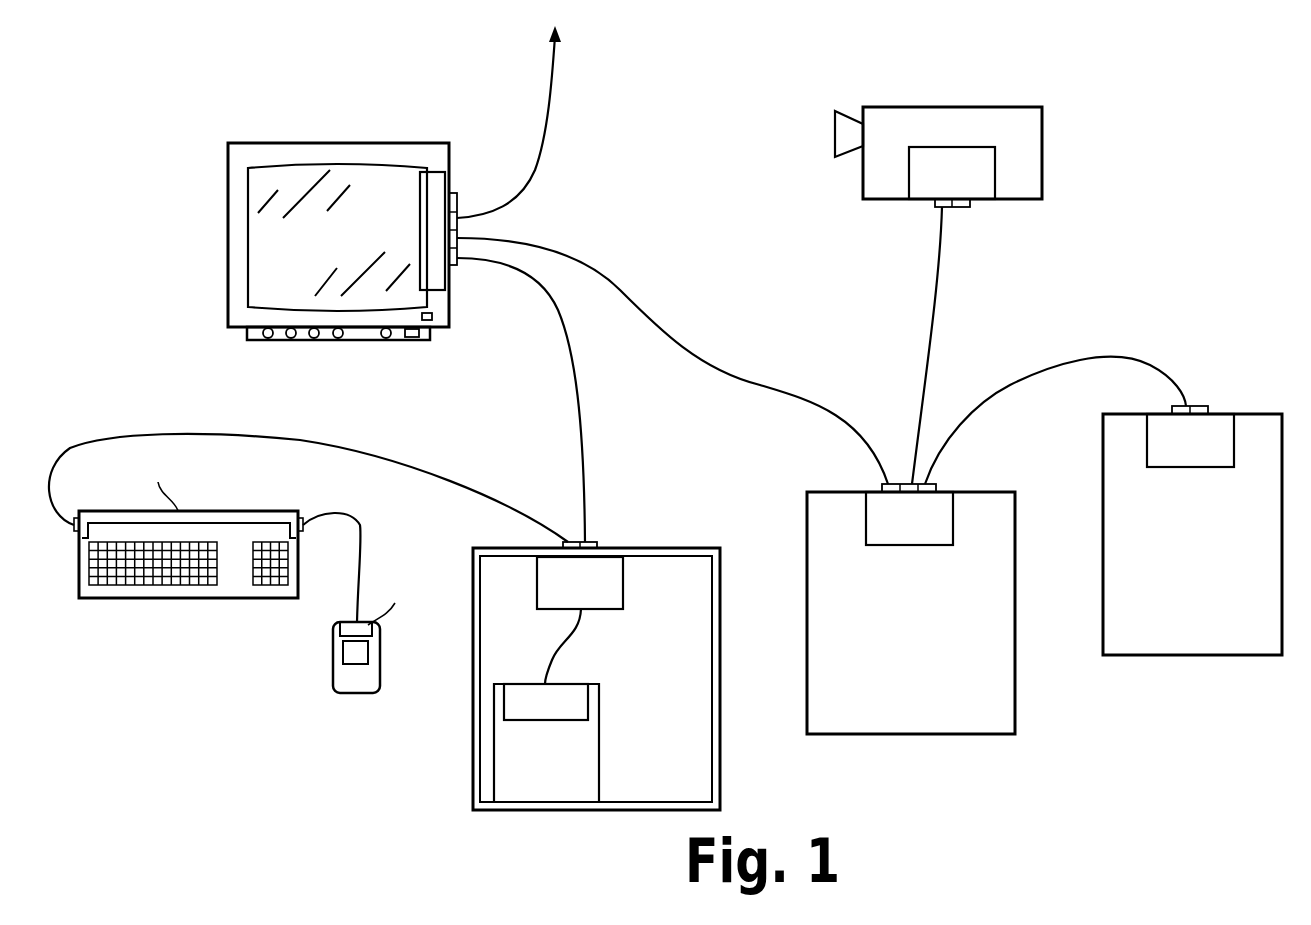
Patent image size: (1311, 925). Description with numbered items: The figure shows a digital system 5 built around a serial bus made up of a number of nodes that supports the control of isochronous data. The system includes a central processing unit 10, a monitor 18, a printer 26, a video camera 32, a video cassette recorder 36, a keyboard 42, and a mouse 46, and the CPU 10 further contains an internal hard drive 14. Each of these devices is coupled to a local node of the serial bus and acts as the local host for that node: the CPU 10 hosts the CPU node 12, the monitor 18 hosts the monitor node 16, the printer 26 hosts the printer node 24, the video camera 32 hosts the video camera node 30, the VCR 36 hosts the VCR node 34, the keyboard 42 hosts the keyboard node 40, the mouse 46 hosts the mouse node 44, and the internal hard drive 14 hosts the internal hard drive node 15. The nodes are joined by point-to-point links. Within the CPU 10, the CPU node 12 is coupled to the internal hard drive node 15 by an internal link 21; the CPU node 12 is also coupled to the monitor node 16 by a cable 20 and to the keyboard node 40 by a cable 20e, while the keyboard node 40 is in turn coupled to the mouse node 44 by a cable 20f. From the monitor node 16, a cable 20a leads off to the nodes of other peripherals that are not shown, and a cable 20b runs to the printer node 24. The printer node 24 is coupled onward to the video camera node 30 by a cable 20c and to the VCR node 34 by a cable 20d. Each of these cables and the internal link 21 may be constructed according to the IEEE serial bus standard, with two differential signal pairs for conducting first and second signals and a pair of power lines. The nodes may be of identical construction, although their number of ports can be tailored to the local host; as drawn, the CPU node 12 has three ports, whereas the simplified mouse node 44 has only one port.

The digital system 5 is at (1108, 808).
The central processing unit (CPU) 10 is at (720, 775).
The CPU node 12 is at (622, 567).
The internal hard drive 14 is at (599, 760).
The internal hard drive node 15 is at (588, 695).
The monitor node 16 is at (440, 177).
The monitor 18 is at (228, 211).
The cable 20 is at (584, 411).
The cable 20a is at (546, 145).
The cable 20b is at (614, 277).
The cable 20c is at (930, 292).
The cable 20d is at (1045, 380).
The cable 20e is at (378, 451).
The cable 20f is at (385, 522).
The internal link 21 is at (573, 650).
The printer node 24 is at (878, 496).
The printer 26 is at (905, 734).
The video camera node 30 is at (985, 196).
The video camera 32 is at (985, 107).
The VCR node 34 is at (1158, 425).
The video cassette recorder (VCR) 36 is at (1183, 655).
The keyboard node 40 is at (228, 513).
The keyboard 42 is at (108, 598).
The mouse node 44 is at (376, 632).
The mouse 46 is at (372, 685).